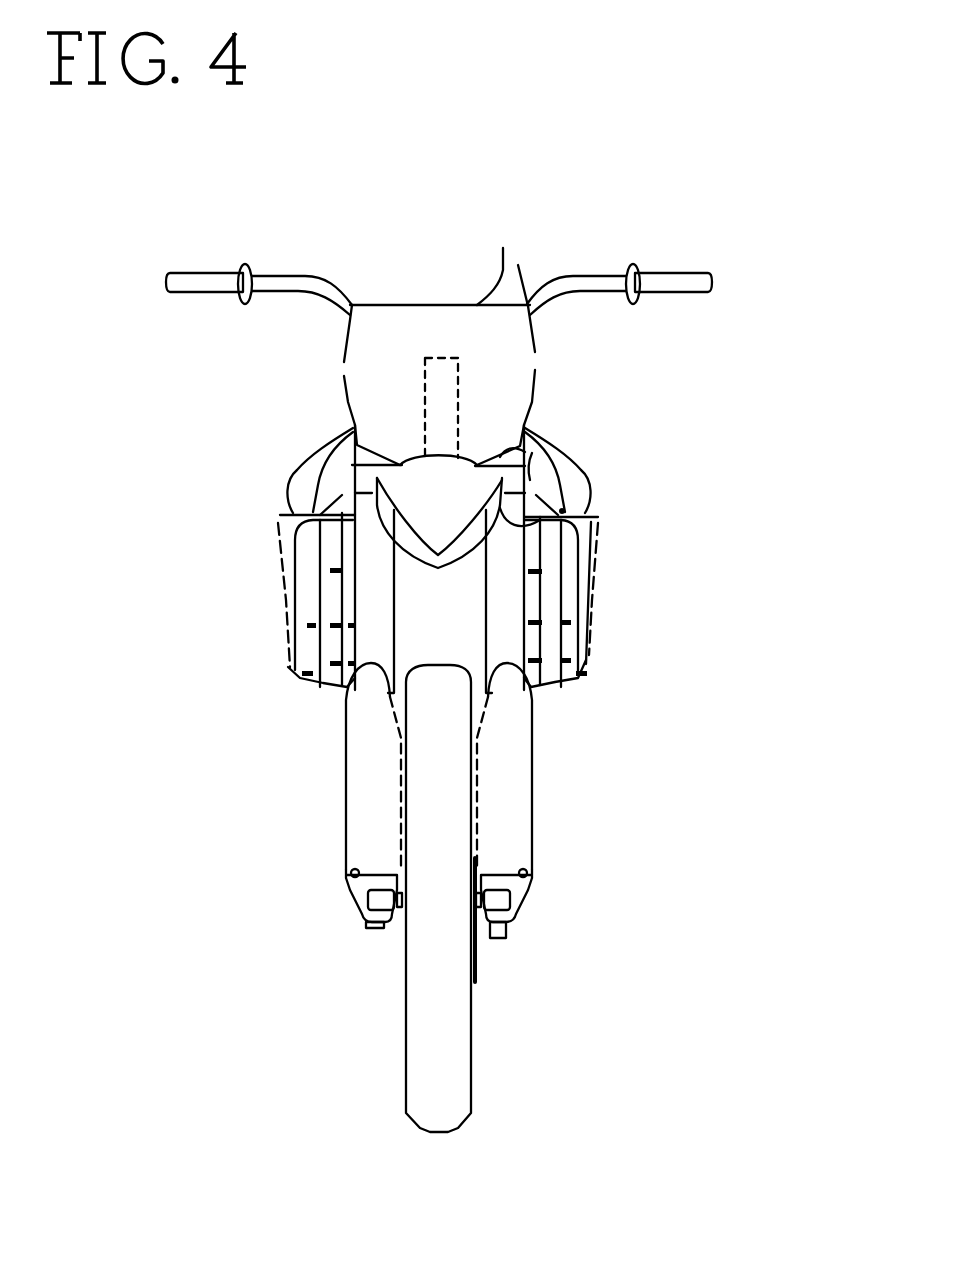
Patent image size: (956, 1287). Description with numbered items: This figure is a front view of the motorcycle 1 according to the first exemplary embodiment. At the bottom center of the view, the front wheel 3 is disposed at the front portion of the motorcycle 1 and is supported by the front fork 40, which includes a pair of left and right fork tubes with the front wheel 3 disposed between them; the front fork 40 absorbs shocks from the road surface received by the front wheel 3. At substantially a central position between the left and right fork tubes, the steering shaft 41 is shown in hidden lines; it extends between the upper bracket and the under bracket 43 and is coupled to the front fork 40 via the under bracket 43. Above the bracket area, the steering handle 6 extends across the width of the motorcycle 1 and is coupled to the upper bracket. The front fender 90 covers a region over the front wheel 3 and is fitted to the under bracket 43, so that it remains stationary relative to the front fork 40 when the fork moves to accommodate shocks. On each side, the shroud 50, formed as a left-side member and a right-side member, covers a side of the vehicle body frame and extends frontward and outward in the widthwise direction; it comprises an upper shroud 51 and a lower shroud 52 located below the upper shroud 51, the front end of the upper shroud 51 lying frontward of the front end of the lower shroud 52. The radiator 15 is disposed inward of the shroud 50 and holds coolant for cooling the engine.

The motorcycle 1 is at (716, 220).
The front wheel 3 is at (474, 1030).
The steering handle 6 is at (306, 270).
The radiator 15 is at (598, 600).
The front fork 40 is at (482, 605).
The steering shaft 41 is at (458, 375).
The under bracket 43 is at (540, 480).
The shroud 50 is at (280, 461).
The upper shroud 51 is at (553, 463).
The lower shroud 52 is at (598, 532).
The front fender 90 is at (565, 509).